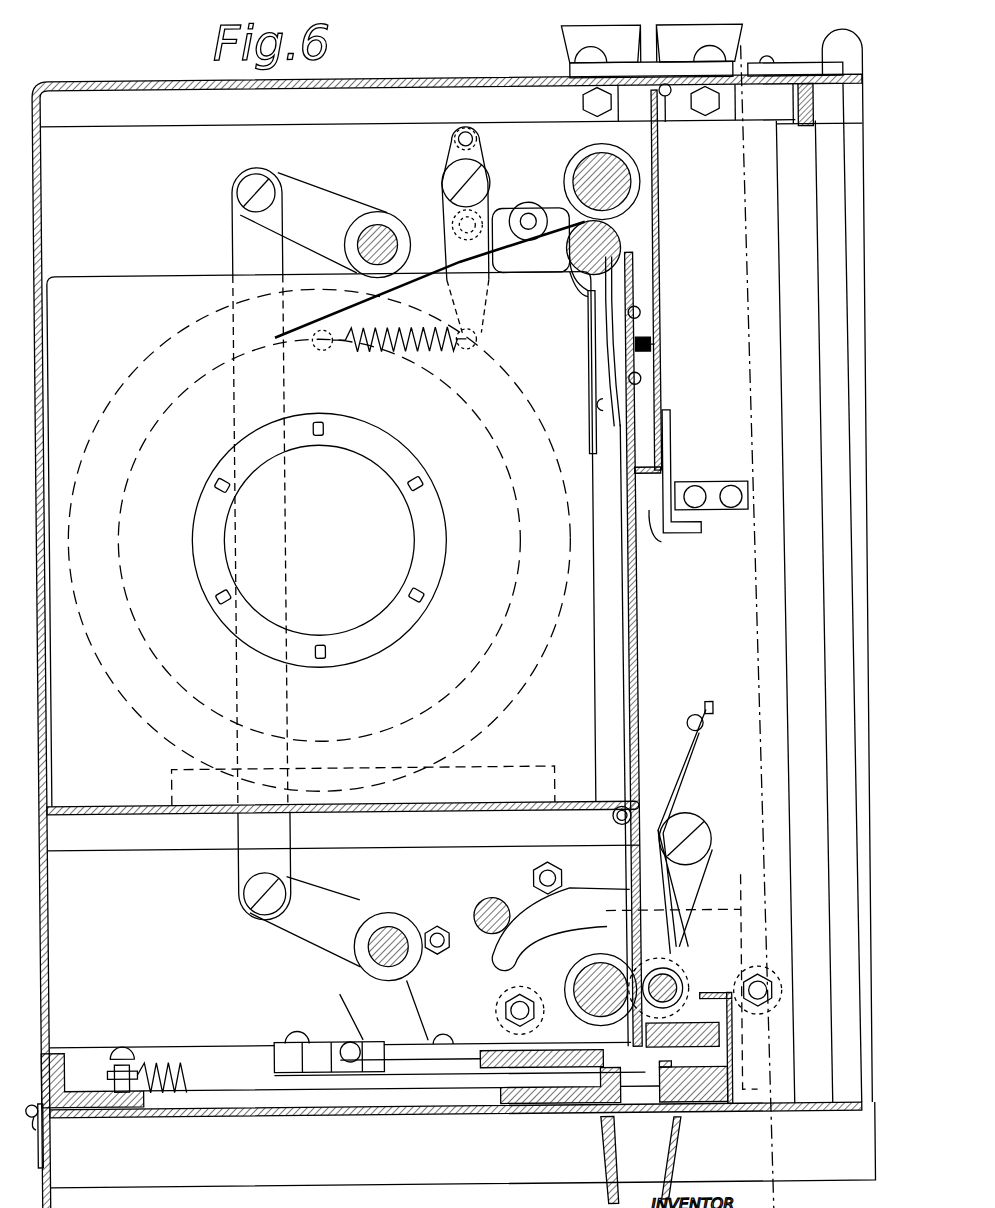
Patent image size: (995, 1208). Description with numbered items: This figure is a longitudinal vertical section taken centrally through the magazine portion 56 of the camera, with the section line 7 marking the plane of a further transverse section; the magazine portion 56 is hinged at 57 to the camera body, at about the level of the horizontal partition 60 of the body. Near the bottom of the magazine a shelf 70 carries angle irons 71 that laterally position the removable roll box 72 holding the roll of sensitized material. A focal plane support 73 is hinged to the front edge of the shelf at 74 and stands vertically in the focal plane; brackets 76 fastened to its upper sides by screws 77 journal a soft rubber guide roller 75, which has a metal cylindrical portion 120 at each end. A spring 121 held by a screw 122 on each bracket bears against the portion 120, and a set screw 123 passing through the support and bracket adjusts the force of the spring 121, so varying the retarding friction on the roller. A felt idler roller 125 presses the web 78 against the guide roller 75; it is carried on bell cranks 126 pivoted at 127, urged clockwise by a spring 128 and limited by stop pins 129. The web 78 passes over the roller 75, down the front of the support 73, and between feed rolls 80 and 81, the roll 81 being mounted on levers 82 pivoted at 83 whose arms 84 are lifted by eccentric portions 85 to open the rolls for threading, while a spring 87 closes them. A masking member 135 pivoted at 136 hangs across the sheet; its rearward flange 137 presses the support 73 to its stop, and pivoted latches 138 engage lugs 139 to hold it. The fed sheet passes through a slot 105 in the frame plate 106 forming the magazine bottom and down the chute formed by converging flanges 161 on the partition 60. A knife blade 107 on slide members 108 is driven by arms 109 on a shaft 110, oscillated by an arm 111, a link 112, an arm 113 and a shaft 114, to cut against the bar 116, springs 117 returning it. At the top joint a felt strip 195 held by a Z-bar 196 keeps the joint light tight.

The section line 7- 7 is at (789, 51).
The magazine portion 56 is at (437, 84).
The hinge 57 is at (33, 1138).
The horizontal partition 60 is at (253, 1112).
The shelf 70 is at (452, 815).
The angle irons 71 is at (533, 769).
The roll box 72 is at (159, 277).
The focal plane support 73 is at (632, 619).
The pivotal axis 74 is at (607, 825).
The guide roller 75 is at (590, 294).
The brackets 76 is at (614, 436).
The screws 77 is at (640, 318).
The web of sheet material 78 is at (502, 261).
The feed roll 80 is at (551, 987).
The feed roll 81 is at (661, 980).
The levers 82 is at (684, 890).
The pivot 83 is at (694, 832).
The lever arms 84 is at (523, 912).
The eccentric portions 85 is at (475, 907).
The spring 87 is at (676, 796).
The slot 105 is at (673, 1081).
The frame plate 106 is at (578, 1118).
The knife blade 107 is at (543, 1074).
The slide members 108 is at (397, 1073).
The arms 109 is at (351, 991).
The shaft 110 is at (382, 926).
The arm 111 is at (299, 925).
The link 112 is at (285, 722).
The arm 113 is at (317, 202).
The shaft 114 is at (382, 236).
The bar 116 is at (684, 1038).
The springs 117 is at (156, 1062).
The cylindrical portion 120 is at (560, 251).
The spring 121 is at (606, 362).
The screw 122 is at (606, 404).
The set screws 123 is at (651, 352).
The idler roller 125 is at (590, 155).
The bell crank 126 is at (498, 162).
The pivot 127 is at (451, 177).
The spring 128 is at (406, 360).
The stop pins 129 is at (530, 214).
The masking member 135 is at (658, 290).
The pivot 136 is at (670, 106).
The rearward flange 137 is at (657, 548).
The pivoted latches 138 is at (671, 461).
The lug 139 is at (678, 488).
The converging flanges 161 is at (598, 1150).
The felt strip 195 is at (815, 122).
The Z-bar 196 is at (796, 132).